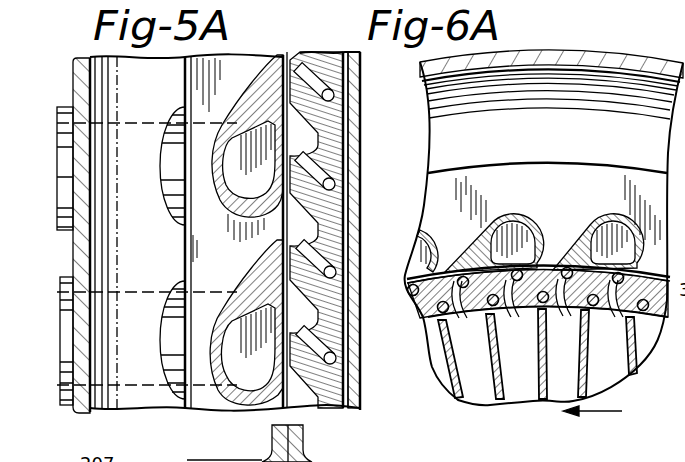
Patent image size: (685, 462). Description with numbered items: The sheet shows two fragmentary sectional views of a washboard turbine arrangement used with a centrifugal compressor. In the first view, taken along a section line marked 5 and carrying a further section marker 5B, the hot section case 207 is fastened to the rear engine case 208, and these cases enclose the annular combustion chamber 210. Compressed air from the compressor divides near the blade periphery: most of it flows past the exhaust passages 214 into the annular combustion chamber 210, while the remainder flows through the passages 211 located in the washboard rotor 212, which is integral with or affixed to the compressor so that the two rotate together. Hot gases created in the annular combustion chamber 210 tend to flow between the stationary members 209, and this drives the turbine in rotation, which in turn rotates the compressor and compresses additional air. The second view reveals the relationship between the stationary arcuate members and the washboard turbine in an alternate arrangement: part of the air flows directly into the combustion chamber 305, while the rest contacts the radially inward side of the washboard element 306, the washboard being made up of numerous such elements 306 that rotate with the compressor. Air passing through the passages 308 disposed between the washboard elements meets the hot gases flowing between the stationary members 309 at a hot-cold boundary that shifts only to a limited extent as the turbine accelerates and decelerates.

In FIG. 5A, the hot section case 207 is at (72, 248).
In FIG. 5A, the rear engine case 208 is at (361, 242).
In FIG. 5A, the stationary members 209 is at (262, 256).
In FIG. 5A, the annular combustion chamber 210 is at (164, 260).
In FIG. 5A, the passages 211 is at (337, 359).
In FIG. 5A, the washboard rotor 212 is at (338, 292).
In FIG. 5A, the exhaust passages 214 is at (167, 304).
In FIG. 6A, the combustion chamber 305 is at (585, 137).
In FIG. 6A, the washboard element 306 is at (625, 305).
In FIG. 6A, the passages 308 is at (530, 305).
In FIG. 6A, the stationary members 309 is at (517, 213).
In FIG. 5A, the section line 5 is at (55, 231).
In FIG. 5A, the section line 5B is at (296, 64).